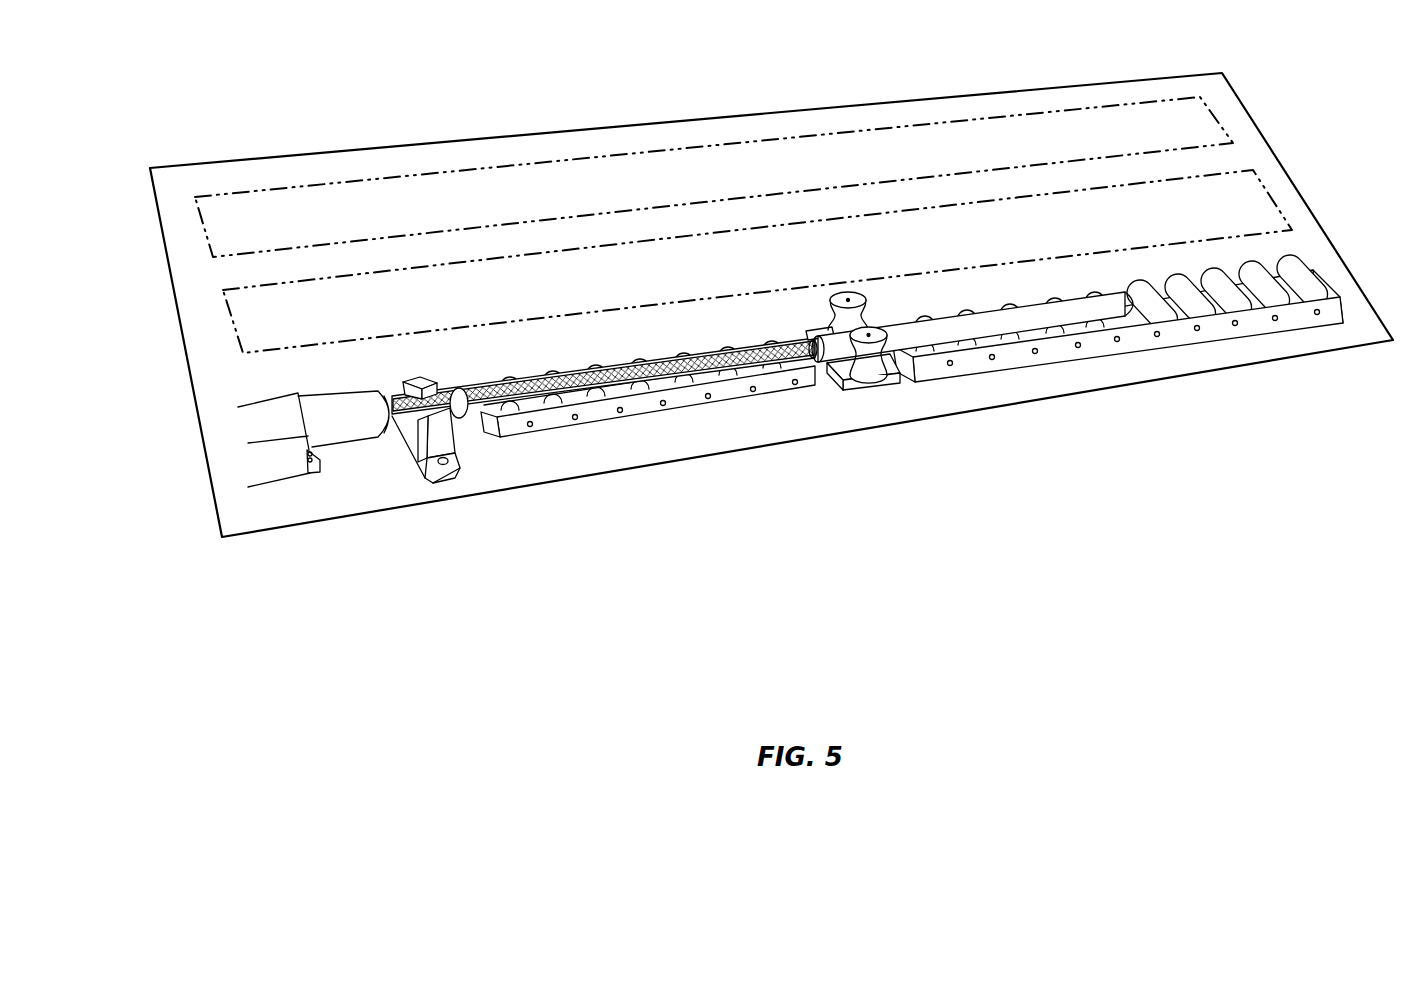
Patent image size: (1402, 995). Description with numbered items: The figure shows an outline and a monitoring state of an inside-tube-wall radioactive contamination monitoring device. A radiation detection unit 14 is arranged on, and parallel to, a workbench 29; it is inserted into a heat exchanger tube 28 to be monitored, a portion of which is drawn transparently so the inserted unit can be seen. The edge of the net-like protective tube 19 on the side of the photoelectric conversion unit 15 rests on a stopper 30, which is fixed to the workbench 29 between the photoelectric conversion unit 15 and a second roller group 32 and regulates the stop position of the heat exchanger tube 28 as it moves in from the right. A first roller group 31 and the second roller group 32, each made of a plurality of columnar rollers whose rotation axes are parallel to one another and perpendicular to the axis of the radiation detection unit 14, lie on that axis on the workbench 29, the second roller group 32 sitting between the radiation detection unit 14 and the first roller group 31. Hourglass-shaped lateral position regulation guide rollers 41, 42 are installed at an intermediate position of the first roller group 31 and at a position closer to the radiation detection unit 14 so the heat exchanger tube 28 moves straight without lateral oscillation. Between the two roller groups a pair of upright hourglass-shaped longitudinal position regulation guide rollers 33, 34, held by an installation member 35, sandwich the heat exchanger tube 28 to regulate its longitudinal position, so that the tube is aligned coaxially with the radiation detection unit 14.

The radiation detection unit 14 is at (652, 340).
The photoelectric conversion unit 15 is at (350, 386).
The net-like protective tube 19 is at (533, 377).
The heat exchanger tube 28 is at (987, 322).
The workbench 29 is at (200, 437).
The stopper 30 is at (453, 440).
The first roller group 31 is at (1118, 327).
The second roller group 32 is at (613, 420).
The longitudinal position regulation guide roller 33 is at (842, 293).
The longitudinal position regulation guide roller 34 is at (845, 390).
The installation member 35 is at (892, 388).
The lateral position regulation guide roller 41 is at (1165, 287).
The lateral position regulation guide roller 42 is at (947, 352).